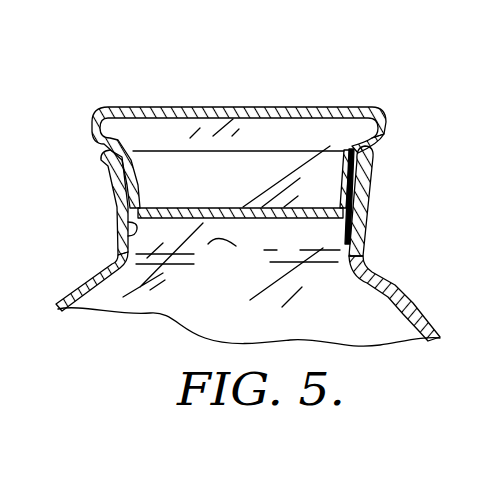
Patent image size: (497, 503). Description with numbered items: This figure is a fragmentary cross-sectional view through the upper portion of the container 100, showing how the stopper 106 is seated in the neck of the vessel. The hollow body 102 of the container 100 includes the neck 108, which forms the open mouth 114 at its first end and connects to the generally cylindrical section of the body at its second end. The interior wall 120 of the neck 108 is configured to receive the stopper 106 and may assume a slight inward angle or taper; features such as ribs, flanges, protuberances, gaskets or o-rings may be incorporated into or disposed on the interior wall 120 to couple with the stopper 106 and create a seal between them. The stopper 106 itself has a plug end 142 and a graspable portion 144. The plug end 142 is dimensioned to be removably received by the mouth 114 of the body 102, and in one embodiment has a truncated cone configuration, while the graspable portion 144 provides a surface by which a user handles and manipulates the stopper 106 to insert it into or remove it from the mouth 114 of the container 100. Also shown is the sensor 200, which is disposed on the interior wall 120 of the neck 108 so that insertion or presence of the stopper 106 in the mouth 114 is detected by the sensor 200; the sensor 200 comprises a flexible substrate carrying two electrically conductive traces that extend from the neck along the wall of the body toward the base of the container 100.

The container 100 is at (88, 84).
The hollow body 102 is at (402, 283).
The stopper 106 is at (322, 106).
The neck 108 is at (360, 238).
The open mouth 114 is at (216, 244).
The interior wall 120 is at (122, 223).
The plug end 142 is at (365, 193).
The graspable portion 144 is at (385, 129).
The sensor 200 is at (345, 236).